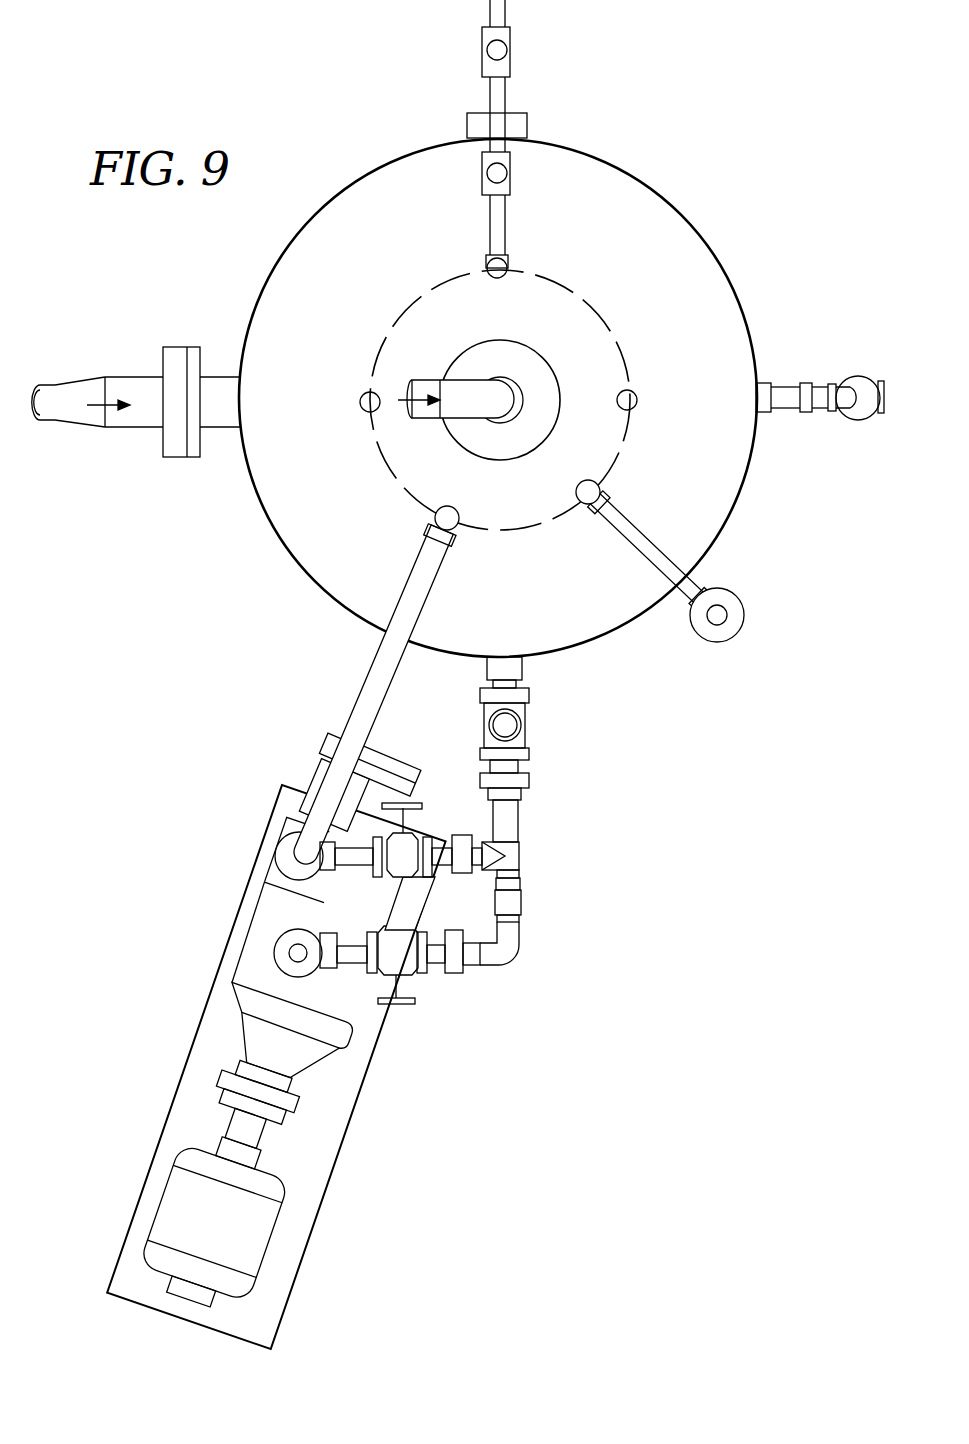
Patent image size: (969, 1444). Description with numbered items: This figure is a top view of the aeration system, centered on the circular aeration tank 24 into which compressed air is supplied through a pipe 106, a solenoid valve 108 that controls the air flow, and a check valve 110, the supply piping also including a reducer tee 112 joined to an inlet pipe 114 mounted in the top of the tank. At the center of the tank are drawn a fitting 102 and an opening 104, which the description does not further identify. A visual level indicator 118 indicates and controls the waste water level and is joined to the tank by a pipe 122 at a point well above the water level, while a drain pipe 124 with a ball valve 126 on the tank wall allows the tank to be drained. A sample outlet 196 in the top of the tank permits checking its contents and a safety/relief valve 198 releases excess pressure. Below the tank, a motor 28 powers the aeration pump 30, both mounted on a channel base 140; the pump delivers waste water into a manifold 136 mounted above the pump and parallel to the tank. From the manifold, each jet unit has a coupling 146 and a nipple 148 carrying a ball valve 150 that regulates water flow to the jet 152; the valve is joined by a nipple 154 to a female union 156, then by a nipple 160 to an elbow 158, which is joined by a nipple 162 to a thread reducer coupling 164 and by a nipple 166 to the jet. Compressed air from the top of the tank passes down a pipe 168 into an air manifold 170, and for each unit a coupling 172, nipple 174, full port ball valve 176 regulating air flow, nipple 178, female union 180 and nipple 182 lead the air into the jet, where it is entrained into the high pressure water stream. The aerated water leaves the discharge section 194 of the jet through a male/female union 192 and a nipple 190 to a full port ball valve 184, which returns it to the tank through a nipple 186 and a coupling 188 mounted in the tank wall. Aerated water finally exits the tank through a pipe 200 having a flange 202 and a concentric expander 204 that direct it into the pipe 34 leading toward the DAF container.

The aeration tank 24 is at (658, 294).
The motor 28 is at (170, 1190).
The aeration pump 30 is at (240, 965).
The pipe 34 is at (45, 422).
The nozzle 102 is at (430, 392).
The center opening 104 is at (505, 378).
The pipe 106 is at (505, 5).
The solenoid valve 108 is at (485, 50).
The check valve 110 is at (507, 173).
The reducer tee 112 is at (489, 262).
The inlet pipe 114 is at (506, 262).
The visual level indicator 118 is at (742, 605).
The pipe 122 is at (642, 540).
The drain pipe 124 is at (790, 385).
The ball valve 126 is at (858, 378).
The manifold 136 is at (275, 947).
The channel base 140 is at (318, 1175).
The coupling 146 is at (318, 940).
The nipple 148 is at (345, 1010).
The ball valve 150 is at (350, 990).
The jet 152 is at (521, 858).
The nipple 154 is at (422, 977).
The female union 156 is at (455, 975).
The elbow 158 is at (522, 952).
The nipple 160 is at (478, 966).
The nipple 162 is at (520, 922).
The thread reducer coupling 164 is at (521, 903).
The nipple 166 is at (521, 884).
The pipe 168 is at (372, 680).
The air manifold 170 is at (278, 855).
The coupling 172 is at (312, 805).
The nipple 174 is at (352, 868).
The full port ball valve 176 is at (434, 946).
The nipple 178 is at (432, 870).
The female union 180 is at (405, 833).
The nipple 182 is at (462, 835).
The full port ball valve 184 is at (530, 724).
The nipple 186 is at (518, 685).
The coupling 188 is at (489, 668).
The nipple 190 is at (520, 767).
The male/female union 192 is at (530, 782).
The discharge section 194 is at (518, 812).
The sample outlet 196 is at (634, 408).
The safety/relief valve 198 is at (362, 398).
The pipe 200 is at (220, 420).
The flange 202 is at (185, 360).
The concentric expander 204 is at (100, 380).